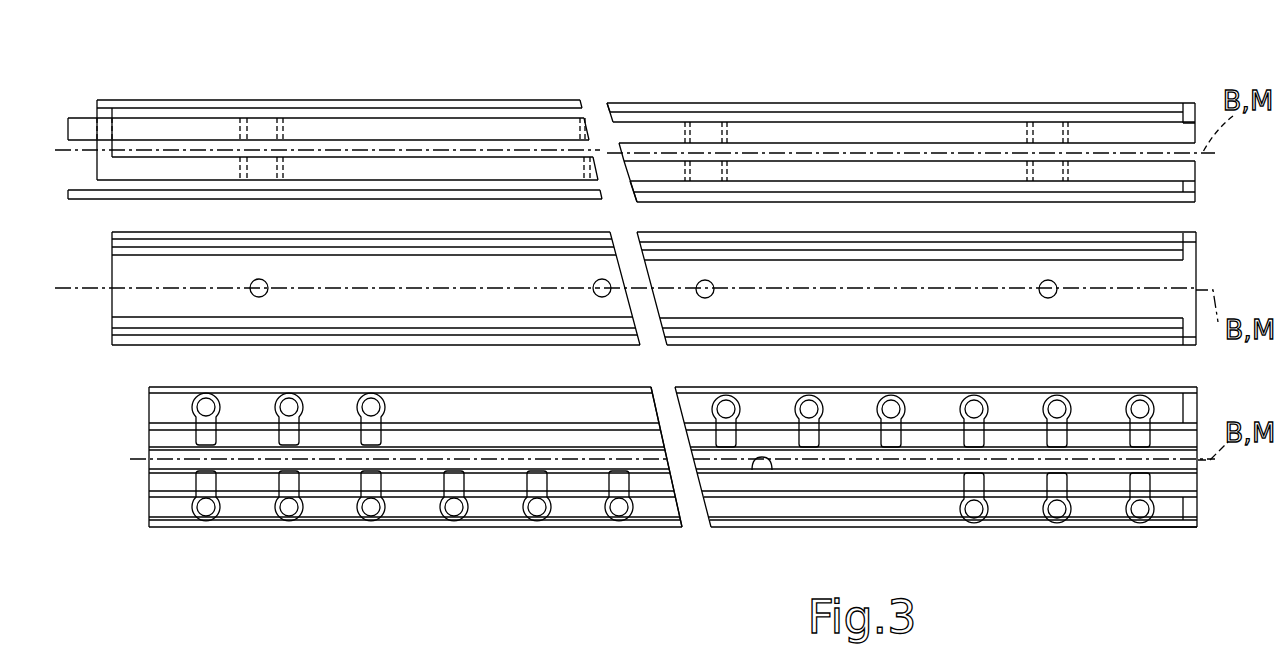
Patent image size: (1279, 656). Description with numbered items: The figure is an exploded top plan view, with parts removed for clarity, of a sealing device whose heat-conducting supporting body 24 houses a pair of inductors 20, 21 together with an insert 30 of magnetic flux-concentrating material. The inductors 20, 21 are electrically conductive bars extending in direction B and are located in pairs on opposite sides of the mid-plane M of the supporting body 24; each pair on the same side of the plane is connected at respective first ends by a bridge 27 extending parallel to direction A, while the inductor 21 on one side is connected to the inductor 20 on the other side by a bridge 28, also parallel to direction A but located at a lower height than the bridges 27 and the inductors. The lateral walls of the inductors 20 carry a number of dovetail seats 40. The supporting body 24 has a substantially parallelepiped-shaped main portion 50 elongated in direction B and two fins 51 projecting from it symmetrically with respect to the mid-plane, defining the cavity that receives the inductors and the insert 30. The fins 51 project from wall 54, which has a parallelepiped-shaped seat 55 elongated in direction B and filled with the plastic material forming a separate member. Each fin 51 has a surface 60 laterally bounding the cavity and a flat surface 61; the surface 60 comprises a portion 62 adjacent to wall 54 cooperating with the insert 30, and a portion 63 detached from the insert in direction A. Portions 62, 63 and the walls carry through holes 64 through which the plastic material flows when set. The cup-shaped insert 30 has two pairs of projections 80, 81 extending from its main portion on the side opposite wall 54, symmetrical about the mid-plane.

The inductor 20 is at (948, 132).
The inductor 21 is at (1124, 106).
The supporting body 24 is at (1089, 541).
The bridge 27 is at (1190, 111).
The bridge 28 is at (103, 114).
The insert 30 is at (1183, 278).
The dovetail seats 40 is at (272, 131).
The main portion 50 is at (147, 425).
The fins 51 is at (1173, 418).
The wall 54 is at (652, 485).
The seat 55 is at (771, 470).
The surface 60 is at (497, 438).
The flat surface 61 is at (165, 391).
The portion 62 is at (562, 426).
The portion 63 is at (603, 401).
The through holes 64 is at (206, 402).
The projections 80 is at (118, 255).
The projections 81 is at (135, 241).